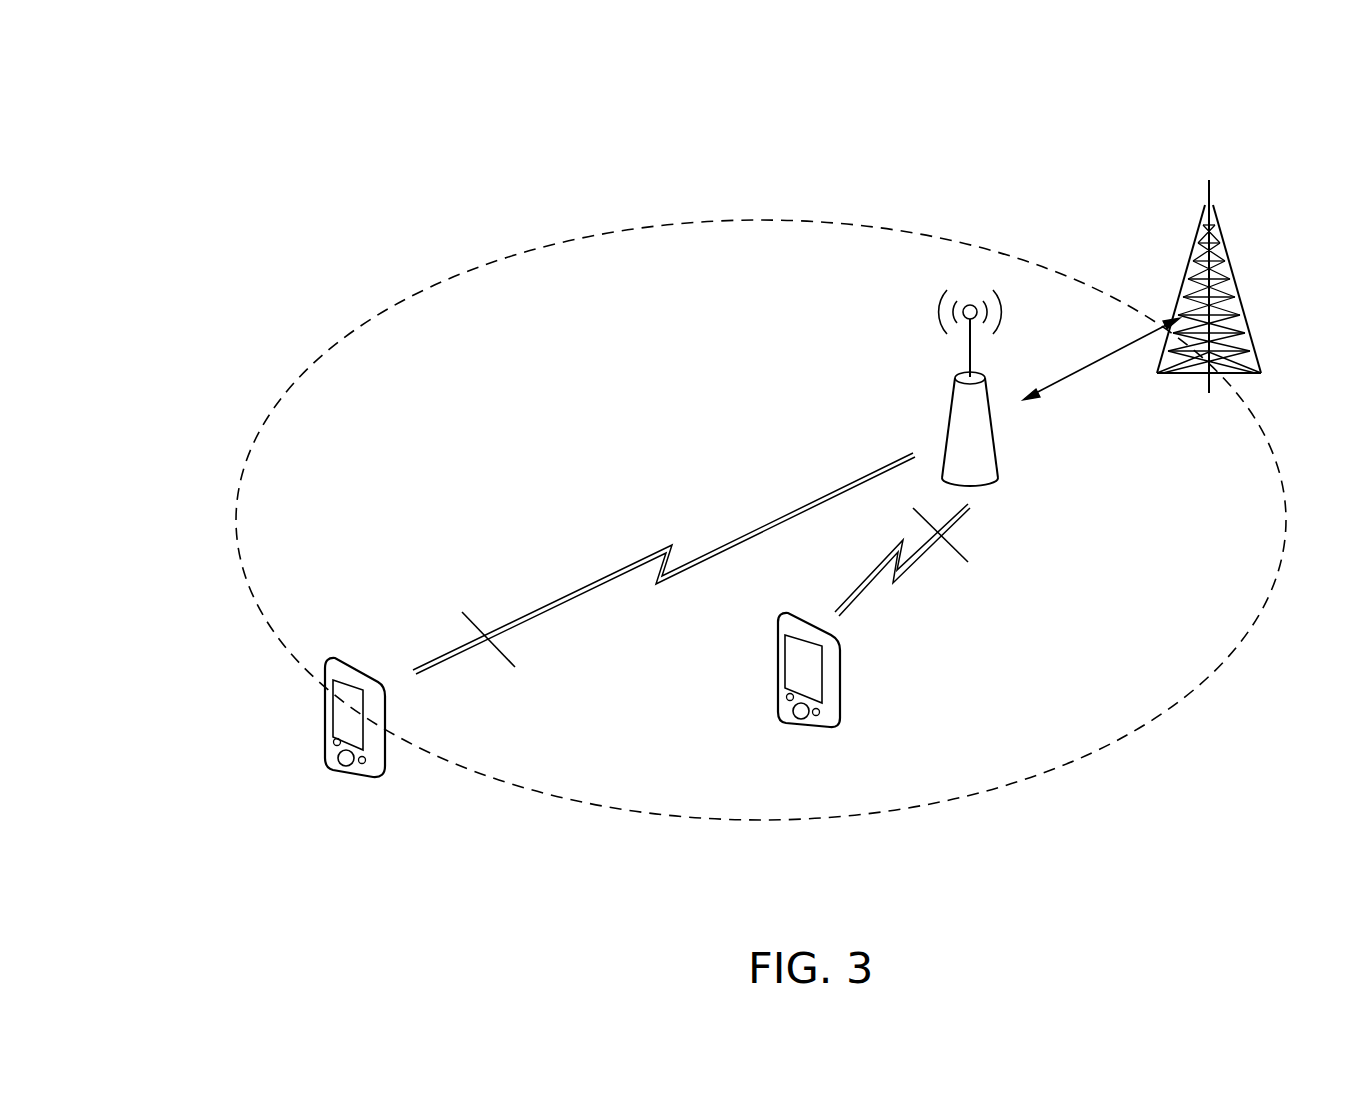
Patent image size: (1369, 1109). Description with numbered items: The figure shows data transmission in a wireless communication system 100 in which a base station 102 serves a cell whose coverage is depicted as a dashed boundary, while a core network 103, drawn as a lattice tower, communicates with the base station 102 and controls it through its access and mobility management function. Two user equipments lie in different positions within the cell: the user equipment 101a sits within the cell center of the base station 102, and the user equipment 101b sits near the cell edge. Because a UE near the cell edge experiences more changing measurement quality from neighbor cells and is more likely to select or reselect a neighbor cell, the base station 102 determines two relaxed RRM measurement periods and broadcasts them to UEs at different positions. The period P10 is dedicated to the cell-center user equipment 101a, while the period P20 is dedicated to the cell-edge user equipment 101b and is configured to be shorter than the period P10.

The wireless communication system 100 is at (267, 169).
The user equipment within cell center 101a is at (780, 675).
The user equipment near cell edge 101b is at (327, 720).
The base station 102 is at (955, 405).
The core network 103 is at (1192, 272).
The first period P10 is at (943, 543).
The second period P20 is at (486, 634).